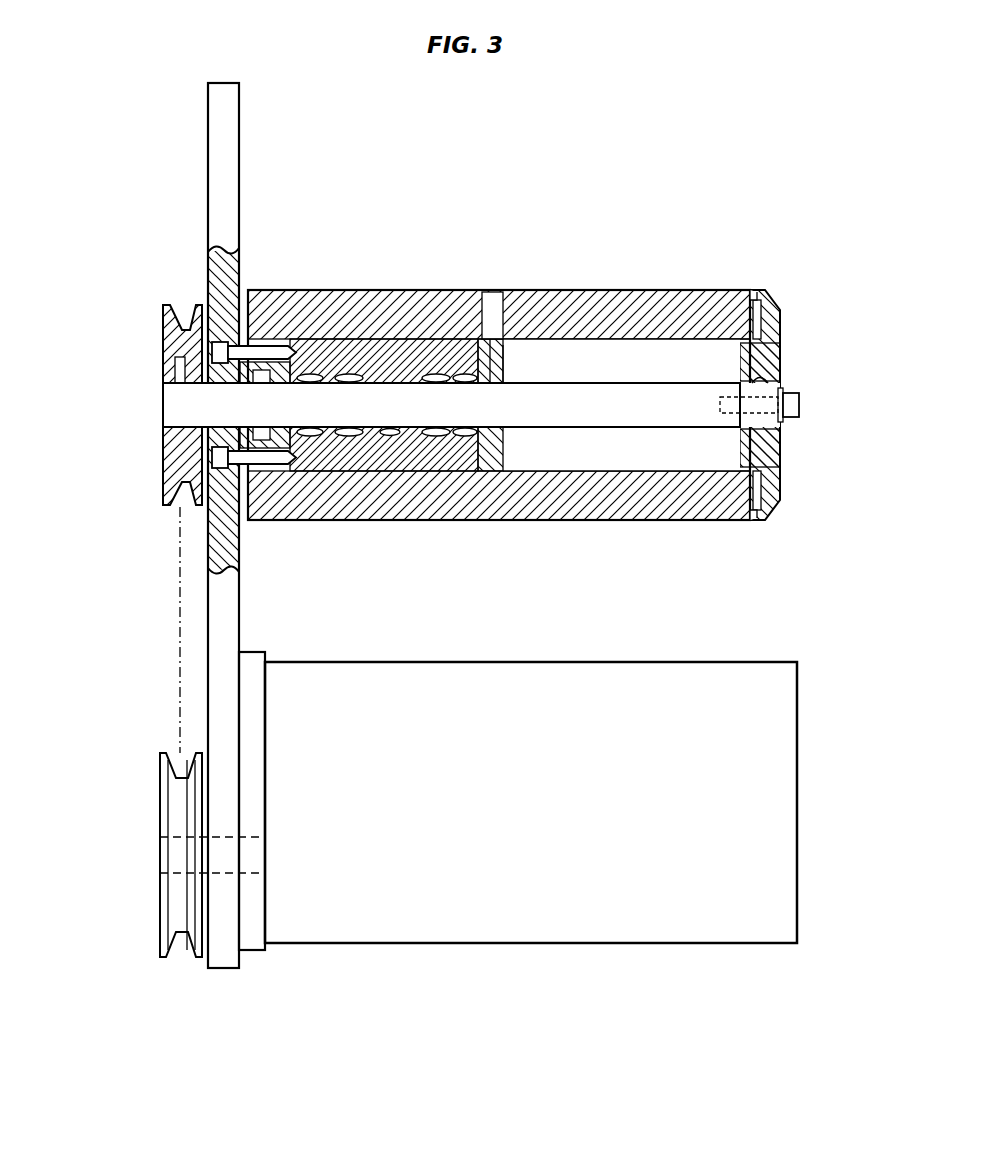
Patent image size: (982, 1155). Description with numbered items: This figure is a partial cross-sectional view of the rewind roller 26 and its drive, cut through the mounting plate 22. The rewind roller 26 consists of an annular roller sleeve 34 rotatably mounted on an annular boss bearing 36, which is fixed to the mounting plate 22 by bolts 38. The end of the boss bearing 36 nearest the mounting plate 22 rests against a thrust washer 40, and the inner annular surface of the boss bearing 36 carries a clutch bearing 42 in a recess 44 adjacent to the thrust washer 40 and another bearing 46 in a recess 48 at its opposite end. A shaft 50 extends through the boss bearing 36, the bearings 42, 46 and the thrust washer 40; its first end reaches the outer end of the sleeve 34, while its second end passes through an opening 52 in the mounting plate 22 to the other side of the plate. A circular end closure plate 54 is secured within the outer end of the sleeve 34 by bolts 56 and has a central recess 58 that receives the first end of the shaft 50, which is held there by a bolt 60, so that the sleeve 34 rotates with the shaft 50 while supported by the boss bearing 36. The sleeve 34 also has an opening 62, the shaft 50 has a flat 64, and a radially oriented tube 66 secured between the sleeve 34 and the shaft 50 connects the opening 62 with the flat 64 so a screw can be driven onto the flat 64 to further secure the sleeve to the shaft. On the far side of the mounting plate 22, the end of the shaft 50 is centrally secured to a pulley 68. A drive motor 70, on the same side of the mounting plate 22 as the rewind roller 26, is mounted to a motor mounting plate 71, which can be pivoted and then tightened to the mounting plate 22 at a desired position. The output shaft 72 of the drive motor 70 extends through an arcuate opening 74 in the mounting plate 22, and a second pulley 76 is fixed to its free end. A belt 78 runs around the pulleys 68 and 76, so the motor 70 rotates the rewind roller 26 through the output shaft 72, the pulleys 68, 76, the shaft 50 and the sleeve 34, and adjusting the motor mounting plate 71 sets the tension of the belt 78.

The mounting plate 22 is at (222, 118).
The rewind roller 26 is at (662, 290).
The roller sleeve 34 is at (572, 305).
The boss bearing 36 is at (380, 360).
The bolts 38 is at (260, 348).
The thrust washer 40 is at (262, 452).
The clutch bearing 42 is at (342, 436).
The recess 44 is at (332, 374).
The bearing 46 is at (460, 436).
The recess 48 is at (437, 374).
The shaft 50 is at (630, 410).
The opening 52 is at (224, 419).
The end closure plate 54 is at (781, 447).
The bolts 56 is at (757, 300).
The central recess 58 is at (770, 380).
The bolt 60 is at (802, 405).
The opening 62 is at (495, 330).
The flat 64 is at (503, 395).
The tube 66 is at (504, 356).
The pulley 68 is at (178, 338).
The drive motor 70 is at (425, 900).
The motor mounting plate 71 is at (250, 662).
The output shaft 72 is at (205, 857).
The arcuate opening 74 is at (225, 877).
The second pulley 76 is at (160, 920).
The belt 78 is at (180, 536).